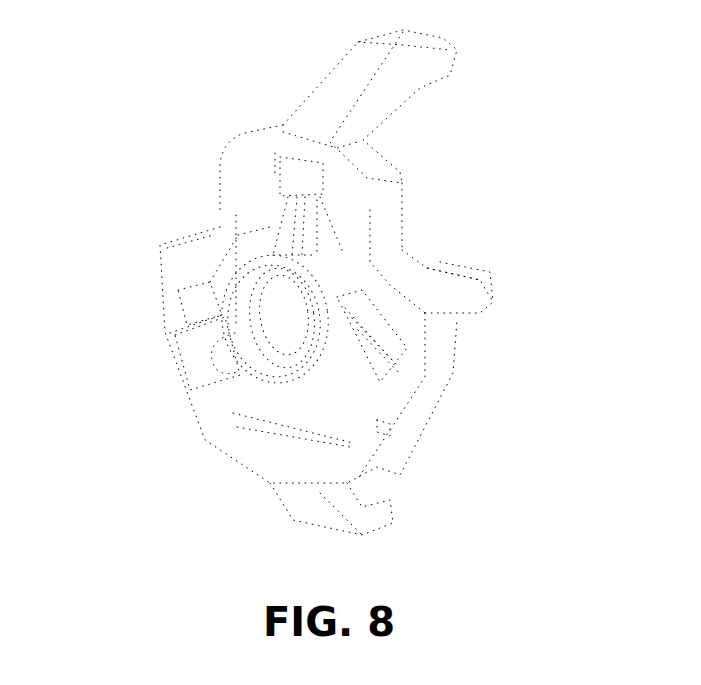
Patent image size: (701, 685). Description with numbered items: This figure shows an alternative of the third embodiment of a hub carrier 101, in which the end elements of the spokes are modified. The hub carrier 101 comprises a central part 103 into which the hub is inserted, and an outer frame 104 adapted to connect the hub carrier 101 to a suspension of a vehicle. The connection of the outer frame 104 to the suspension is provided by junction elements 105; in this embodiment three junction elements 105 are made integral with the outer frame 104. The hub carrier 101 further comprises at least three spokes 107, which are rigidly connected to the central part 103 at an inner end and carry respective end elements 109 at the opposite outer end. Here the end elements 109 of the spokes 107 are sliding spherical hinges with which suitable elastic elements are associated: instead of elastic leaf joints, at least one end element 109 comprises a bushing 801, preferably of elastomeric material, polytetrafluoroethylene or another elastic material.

The hub carrier 101 is at (514, 376).
The central part 103 is at (277, 337).
The outer frame 104 is at (420, 285).
The junction element 105 is at (312, 103).
The spoke 107 is at (283, 220).
The end element 109 is at (328, 201).
The bushing 801 is at (198, 359).